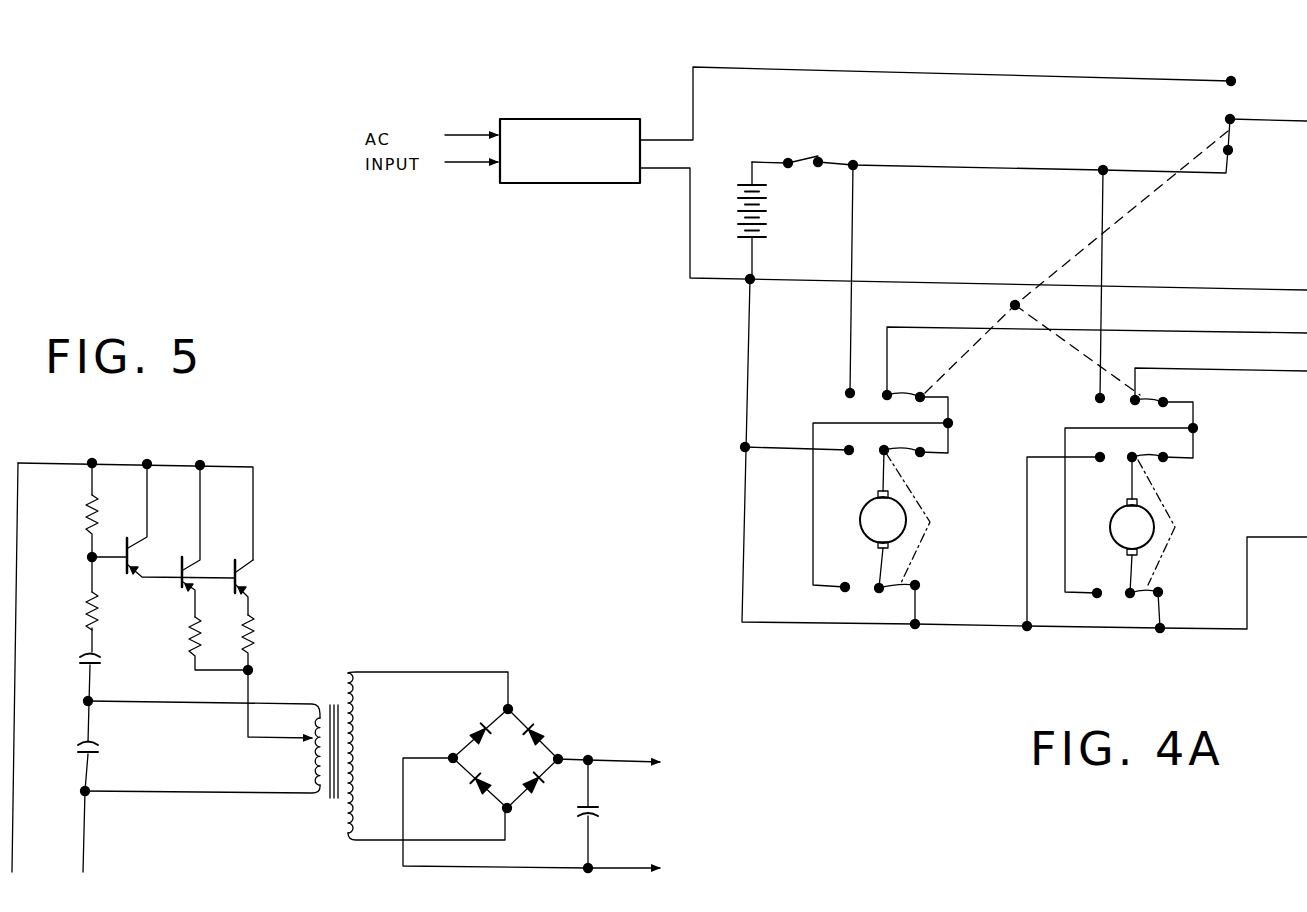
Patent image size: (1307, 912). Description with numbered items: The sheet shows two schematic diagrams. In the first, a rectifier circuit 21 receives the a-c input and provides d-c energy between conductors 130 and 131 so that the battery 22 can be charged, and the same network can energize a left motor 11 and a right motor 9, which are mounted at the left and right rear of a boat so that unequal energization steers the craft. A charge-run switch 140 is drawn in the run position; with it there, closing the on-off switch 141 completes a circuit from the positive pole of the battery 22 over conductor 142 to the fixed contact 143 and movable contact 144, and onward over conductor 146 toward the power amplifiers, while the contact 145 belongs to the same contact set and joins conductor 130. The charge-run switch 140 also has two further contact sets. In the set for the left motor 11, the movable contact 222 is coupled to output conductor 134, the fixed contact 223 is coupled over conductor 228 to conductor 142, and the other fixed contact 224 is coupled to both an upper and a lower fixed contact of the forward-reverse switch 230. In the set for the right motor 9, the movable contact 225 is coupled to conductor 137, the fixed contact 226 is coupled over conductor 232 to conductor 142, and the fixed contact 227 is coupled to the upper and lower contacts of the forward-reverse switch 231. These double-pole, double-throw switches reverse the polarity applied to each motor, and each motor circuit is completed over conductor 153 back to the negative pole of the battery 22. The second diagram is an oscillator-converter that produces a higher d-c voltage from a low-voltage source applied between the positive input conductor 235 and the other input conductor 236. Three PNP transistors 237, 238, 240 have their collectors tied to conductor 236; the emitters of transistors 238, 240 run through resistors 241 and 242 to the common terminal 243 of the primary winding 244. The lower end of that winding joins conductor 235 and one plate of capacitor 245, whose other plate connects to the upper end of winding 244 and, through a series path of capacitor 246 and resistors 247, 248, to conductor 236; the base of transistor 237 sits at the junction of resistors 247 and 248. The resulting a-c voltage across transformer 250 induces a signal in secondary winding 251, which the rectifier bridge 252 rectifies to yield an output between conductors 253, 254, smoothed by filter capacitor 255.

In FIG. 4A, the rectifier circuit 21 is at (579, 163).
In FIG. 4A, the battery 22 is at (766, 220).
In FIG. 4A, the conductor 130 is at (935, 95).
In FIG. 4A, the conductor 131 is at (973, 230).
In FIG. 4A, the output conductor 134 is at (1097, 356).
In FIG. 4A, the conductor 137 is at (1221, 384).
In FIG. 4A, the charge-run switch 140 is at (1076, 263).
In FIG. 4A, the on-off switch 141 is at (805, 171).
In FIG. 4A, the conductor 142 is at (991, 147).
In FIG. 4A, the fixed contact 143 is at (1246, 153).
In FIG. 4A, the movable contact 144 is at (1228, 128).
In FIG. 4A, the contact 145 is at (1231, 70).
In FIG. 4A, the conductor 146 is at (1294, 120).
In FIG. 4A, the conductor 153 is at (1007, 456).
In FIG. 4A, the movable contact 222 is at (905, 393).
In FIG. 4A, the fixed contact 223 is at (846, 490).
In FIG. 4A, the fixed contact 224 is at (916, 427).
In FIG. 4A, the movable contact 225 is at (1157, 391).
In FIG. 4A, the fixed contact 226 is at (1110, 510).
In FIG. 4A, the fixed contact 227 is at (1163, 432).
In FIG. 4A, the conductor 228 is at (871, 279).
In FIG. 4A, the forward-reverse switch 230 is at (921, 519).
In FIG. 4A, the forward-reverse switch 231 is at (1172, 522).
In FIG. 4A, the conductor 232 is at (1103, 285).
In FIG. 4A, the left motor 11 is at (884, 537).
In FIG. 4A, the right motor 9 is at (1131, 542).
In FIG. 5, the positive input conductor 235 is at (135, 668).
In FIG. 5, the input conductor 236 is at (25, 668).
In FIG. 5, the transistor 237 is at (163, 521).
In FIG. 5, the transistor 238 is at (172, 541).
In FIG. 5, the transistor 240 is at (253, 587).
In FIG. 5, the resistor 241 is at (200, 643).
In FIG. 5, the resistor 242 is at (268, 645).
In FIG. 5, the common terminal 243 is at (310, 742).
In FIG. 5, the primary winding 244 is at (314, 782).
In FIG. 5, the capacitor 245 is at (105, 750).
In FIG. 5, the capacitor 246 is at (65, 670).
In FIG. 5, the resistor 247 is at (70, 611).
In FIG. 5, the resistor 248 is at (70, 514).
In FIG. 5, the transformer 250 is at (316, 735).
In FIG. 5, the secondary winding 251 is at (428, 756).
In FIG. 5, the rectifier bridge 252 is at (506, 759).
In FIG. 5, the output conductor 253 is at (646, 760).
In FIG. 5, the output conductor 254 is at (606, 858).
In FIG. 5, the filter capacitor 255 is at (608, 814).